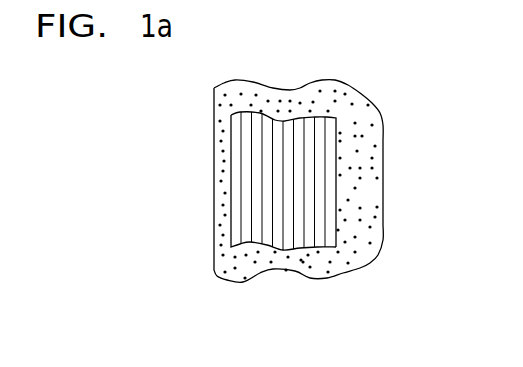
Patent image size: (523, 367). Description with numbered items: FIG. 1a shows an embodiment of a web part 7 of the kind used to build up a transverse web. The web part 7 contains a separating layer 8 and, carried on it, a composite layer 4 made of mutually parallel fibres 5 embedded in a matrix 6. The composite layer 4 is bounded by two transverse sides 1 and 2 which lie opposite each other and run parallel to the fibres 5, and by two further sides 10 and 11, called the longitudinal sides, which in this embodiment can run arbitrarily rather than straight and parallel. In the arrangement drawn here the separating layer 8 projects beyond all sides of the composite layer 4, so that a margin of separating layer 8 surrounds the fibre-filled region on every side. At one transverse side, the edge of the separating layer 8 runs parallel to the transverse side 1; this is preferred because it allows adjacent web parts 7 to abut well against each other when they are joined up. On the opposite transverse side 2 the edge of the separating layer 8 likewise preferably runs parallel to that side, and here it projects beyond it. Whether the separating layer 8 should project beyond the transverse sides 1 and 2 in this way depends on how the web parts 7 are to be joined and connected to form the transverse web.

The transverse side 1 is at (229, 186).
The transverse side 2 is at (338, 194).
The composite layer 4 is at (292, 246).
The fibres 5 is at (259, 224).
The matrix 6 is at (305, 246).
The web part 7 is at (263, 77).
The separating layer 8 is at (362, 125).
The longitudinal side 10 is at (322, 115).
The longitudinal side 11 is at (283, 240).